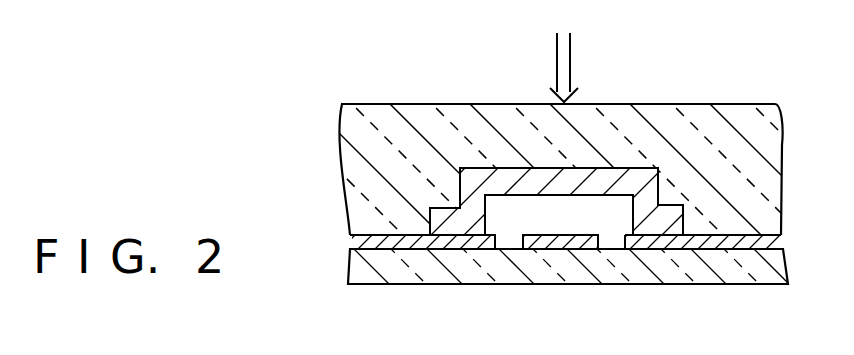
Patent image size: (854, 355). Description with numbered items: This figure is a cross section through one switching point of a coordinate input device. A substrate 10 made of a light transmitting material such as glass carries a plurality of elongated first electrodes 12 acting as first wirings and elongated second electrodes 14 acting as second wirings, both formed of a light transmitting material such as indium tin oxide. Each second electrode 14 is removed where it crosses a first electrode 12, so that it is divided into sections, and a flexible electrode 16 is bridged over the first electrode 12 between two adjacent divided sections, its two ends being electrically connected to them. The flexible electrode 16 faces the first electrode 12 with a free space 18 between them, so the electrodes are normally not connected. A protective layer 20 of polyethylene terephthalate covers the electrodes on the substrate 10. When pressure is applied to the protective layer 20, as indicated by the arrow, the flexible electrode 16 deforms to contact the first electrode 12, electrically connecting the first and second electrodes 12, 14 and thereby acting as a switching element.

The substrate 10 is at (728, 268).
The first electrode 12 is at (565, 243).
The second electrode 14 is at (357, 226).
The flexible electrode 16 is at (625, 175).
The free space 18 is at (505, 233).
The protective layer 20 is at (742, 118).